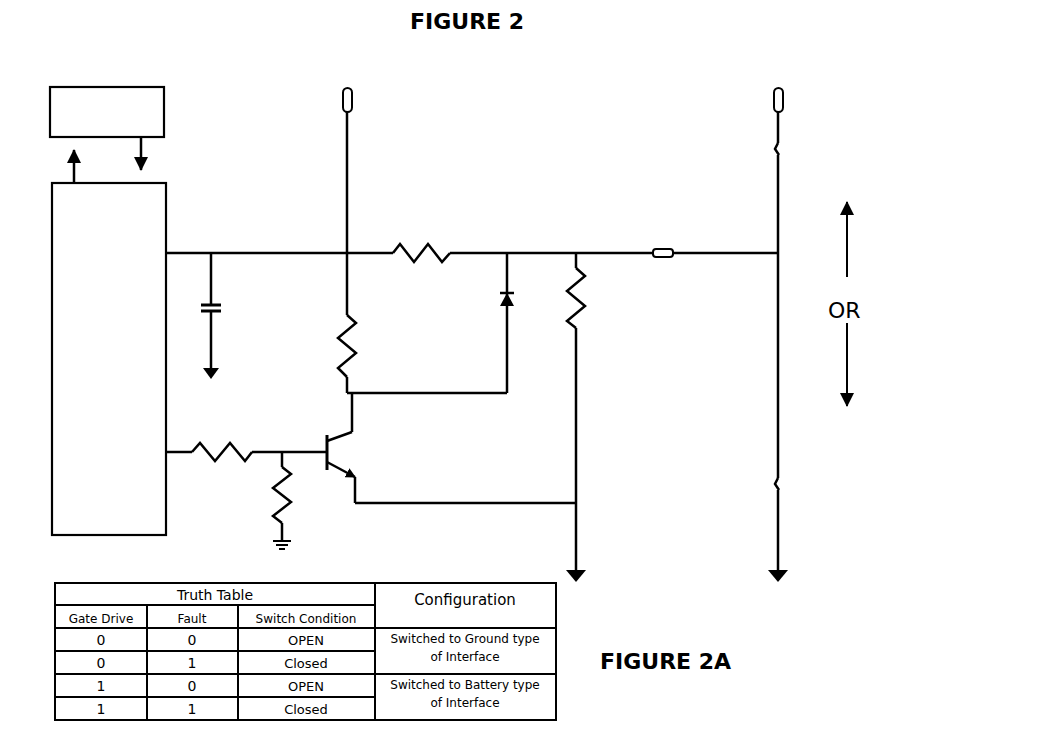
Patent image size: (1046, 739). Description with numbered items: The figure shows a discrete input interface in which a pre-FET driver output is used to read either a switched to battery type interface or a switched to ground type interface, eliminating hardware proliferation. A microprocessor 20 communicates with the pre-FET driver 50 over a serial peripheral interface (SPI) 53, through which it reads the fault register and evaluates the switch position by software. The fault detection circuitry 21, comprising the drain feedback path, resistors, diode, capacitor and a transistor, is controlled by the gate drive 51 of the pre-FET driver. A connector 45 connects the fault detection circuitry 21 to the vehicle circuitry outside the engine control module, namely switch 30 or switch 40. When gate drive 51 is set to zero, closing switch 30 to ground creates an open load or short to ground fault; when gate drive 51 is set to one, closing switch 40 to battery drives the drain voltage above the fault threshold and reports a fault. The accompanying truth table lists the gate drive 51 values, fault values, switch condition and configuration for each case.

The microprocessor 20 is at (130, 122).
The serial peripheral interface (SPI) 53 is at (145, 148).
The Pre-FET driver 50 is at (120, 240).
The fault detection circuitry 21 is at (459, 133).
The gate drive 51 is at (180, 463).
The connector 45 is at (671, 262).
The switch 40 is at (760, 136).
The switch 30 is at (762, 480).